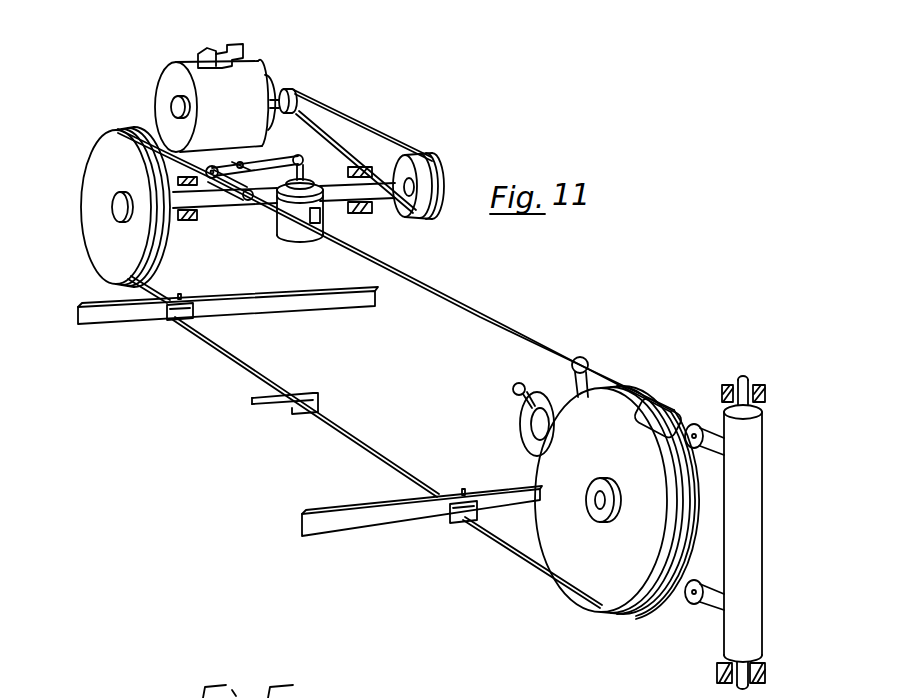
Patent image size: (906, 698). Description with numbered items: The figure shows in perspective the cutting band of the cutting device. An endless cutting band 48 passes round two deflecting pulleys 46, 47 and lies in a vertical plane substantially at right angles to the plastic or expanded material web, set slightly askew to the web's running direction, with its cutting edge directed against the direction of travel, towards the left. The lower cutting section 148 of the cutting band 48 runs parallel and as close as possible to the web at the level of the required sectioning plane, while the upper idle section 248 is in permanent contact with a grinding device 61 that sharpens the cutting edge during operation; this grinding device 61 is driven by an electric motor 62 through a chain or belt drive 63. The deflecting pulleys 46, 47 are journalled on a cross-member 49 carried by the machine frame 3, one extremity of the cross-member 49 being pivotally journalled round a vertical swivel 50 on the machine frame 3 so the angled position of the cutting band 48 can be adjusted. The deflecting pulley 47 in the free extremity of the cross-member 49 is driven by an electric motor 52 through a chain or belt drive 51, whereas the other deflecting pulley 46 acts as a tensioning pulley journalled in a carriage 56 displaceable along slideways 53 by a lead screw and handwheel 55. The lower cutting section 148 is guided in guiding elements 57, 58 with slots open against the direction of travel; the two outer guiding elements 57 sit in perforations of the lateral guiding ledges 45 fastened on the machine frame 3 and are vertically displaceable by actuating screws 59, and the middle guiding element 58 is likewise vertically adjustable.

The machine frame 3 is at (728, 385).
The lateral guiding ledge 45 is at (125, 322).
The deflecting pulley 46 is at (562, 552).
The deflecting pulley 47 is at (103, 146).
The cutting band 48 is at (443, 303).
The cross-member 49 is at (357, 213).
The vertical swivel 50 is at (738, 618).
The chain or belt drive 51 is at (368, 138).
The electric motor 52 is at (250, 78).
The slideway 53 is at (690, 437).
The handwheel 55 is at (525, 418).
The carriage 56 is at (681, 412).
The outer guiding element 57 is at (193, 320).
The middle guiding element 58 is at (306, 394).
The actuating screw 59 is at (180, 295).
The grinding device 61 is at (235, 188).
The electric motor 62 is at (292, 233).
The chain or belt drive 63 is at (283, 148).
The lower cutting section 148 is at (337, 437).
The upper idle section 248 is at (505, 291).